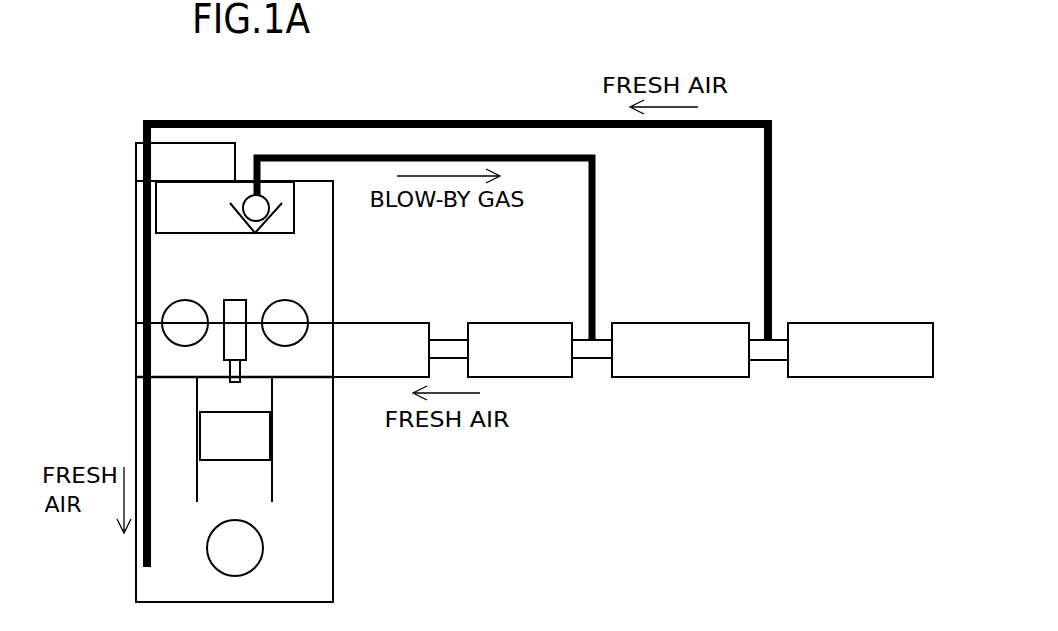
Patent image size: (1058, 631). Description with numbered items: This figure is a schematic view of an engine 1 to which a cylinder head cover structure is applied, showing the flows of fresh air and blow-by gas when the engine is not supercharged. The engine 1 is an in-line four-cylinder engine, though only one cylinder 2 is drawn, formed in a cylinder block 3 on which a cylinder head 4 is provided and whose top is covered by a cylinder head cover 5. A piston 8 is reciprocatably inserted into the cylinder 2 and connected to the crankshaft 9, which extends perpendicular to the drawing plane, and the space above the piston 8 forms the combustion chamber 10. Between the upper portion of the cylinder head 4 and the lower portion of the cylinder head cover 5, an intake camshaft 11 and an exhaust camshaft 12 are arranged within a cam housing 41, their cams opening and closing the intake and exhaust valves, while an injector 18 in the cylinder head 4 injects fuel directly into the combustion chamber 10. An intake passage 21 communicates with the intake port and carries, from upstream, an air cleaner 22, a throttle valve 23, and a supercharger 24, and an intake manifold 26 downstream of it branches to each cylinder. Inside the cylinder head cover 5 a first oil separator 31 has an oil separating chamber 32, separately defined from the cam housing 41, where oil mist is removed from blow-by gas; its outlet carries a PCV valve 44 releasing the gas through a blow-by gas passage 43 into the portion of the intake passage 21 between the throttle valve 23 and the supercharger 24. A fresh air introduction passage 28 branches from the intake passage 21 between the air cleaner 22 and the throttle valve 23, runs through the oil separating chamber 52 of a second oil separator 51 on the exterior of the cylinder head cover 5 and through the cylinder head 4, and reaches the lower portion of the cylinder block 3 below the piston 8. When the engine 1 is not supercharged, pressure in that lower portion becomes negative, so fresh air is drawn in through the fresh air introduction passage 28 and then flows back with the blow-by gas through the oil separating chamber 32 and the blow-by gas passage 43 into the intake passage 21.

The engine 1 is at (348, 247).
The cylinder 2 is at (205, 393).
The cylinder block 3 is at (333, 505).
The cylinder head 4 is at (136, 355).
The cylinder head cover 5 is at (136, 270).
The piston 8 is at (253, 437).
The crankshaft 9 is at (263, 548).
The combustion chamber 10 is at (260, 395).
The intake camshaft 11 is at (285, 300).
The exhaust camshaft 12 is at (185, 300).
The injector 18 is at (235, 300).
The intake passage 21 is at (588, 360).
The air cleaner 22 is at (860, 378).
The throttle valve 23 is at (680, 378).
The supercharger 24 is at (540, 378).
The intake manifold 26 is at (408, 323).
The fresh air introduction passage 28 is at (475, 120).
The first oil separator 31 is at (305, 212).
The oil separating chamber 32 is at (173, 210).
The cam housing 41 is at (333, 280).
The blow-by gas passage 43 is at (412, 155).
The PCV valve 44 is at (265, 198).
The second oil separator 51 is at (218, 140).
The oil separating chamber 52 is at (172, 155).